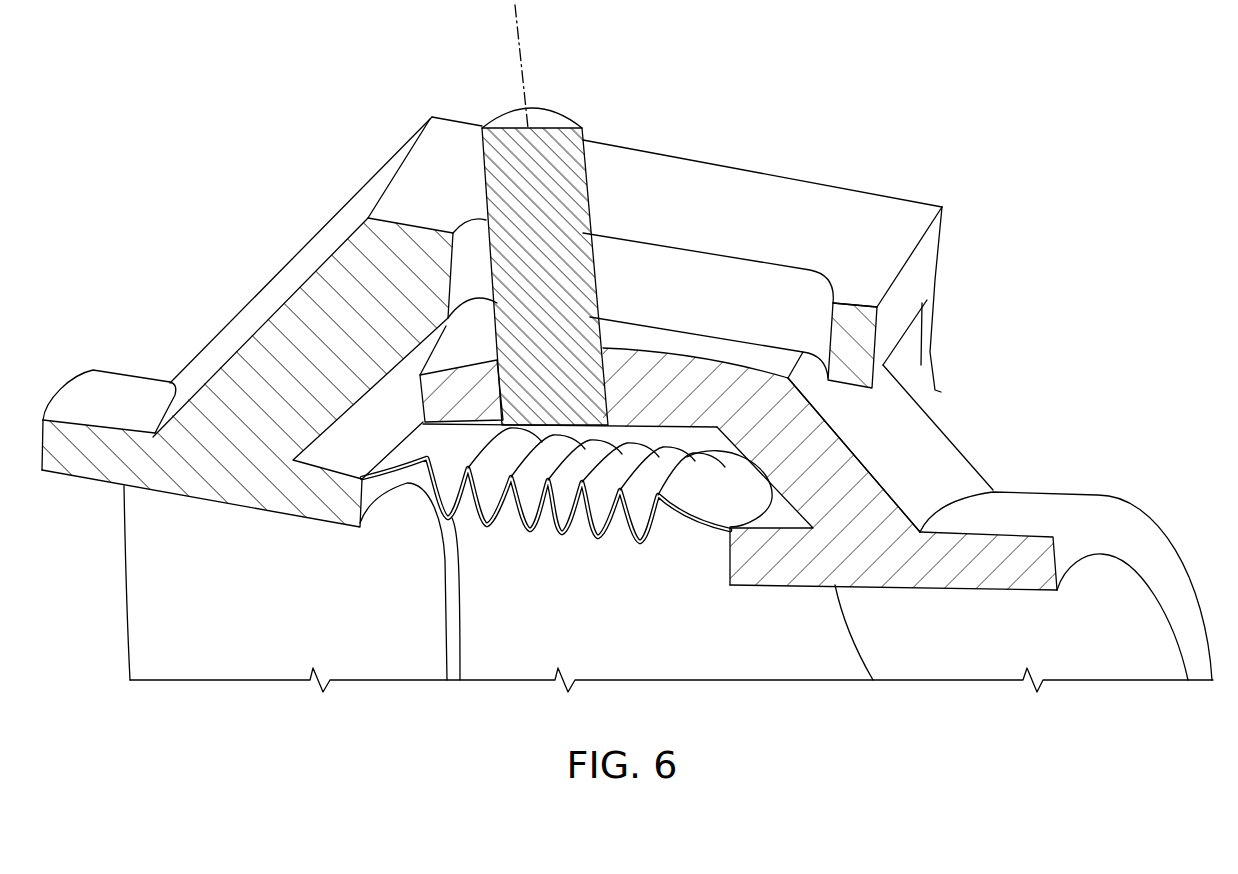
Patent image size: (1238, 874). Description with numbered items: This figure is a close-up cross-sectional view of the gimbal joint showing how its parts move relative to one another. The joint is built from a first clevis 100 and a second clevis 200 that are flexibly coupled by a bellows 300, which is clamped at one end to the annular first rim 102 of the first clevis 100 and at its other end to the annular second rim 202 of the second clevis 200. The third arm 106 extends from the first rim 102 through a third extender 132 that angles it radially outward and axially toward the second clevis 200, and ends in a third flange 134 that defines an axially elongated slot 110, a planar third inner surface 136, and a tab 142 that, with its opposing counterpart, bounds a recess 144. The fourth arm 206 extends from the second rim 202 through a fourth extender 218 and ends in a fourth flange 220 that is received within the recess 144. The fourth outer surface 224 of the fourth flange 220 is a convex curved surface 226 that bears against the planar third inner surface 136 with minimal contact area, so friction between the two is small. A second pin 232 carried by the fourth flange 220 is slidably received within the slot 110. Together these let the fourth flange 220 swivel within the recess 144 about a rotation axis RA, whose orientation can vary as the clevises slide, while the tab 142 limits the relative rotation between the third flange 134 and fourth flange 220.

The first clevis 100 is at (140, 287).
The first rim 102 is at (95, 383).
The third arm 106 is at (223, 303).
The slot 110 is at (637, 292).
The third extender 132 is at (290, 275).
The third flange 134 is at (884, 218).
The third inner surface 136 is at (757, 347).
The tab 142 is at (930, 323).
The recess 144 is at (919, 373).
The second clevis 200 is at (1065, 388).
The second rim 202 is at (1052, 505).
The fourth arm 206 is at (947, 418).
The fourth extender 218 is at (953, 468).
The fourth flange 220 is at (443, 395).
The fourth outer surface 224 is at (676, 347).
The curved surface 226 is at (676, 347).
The second pin 232 is at (562, 122).
The bellows 300 is at (584, 601).
The rotation axis RA is at (532, 42).